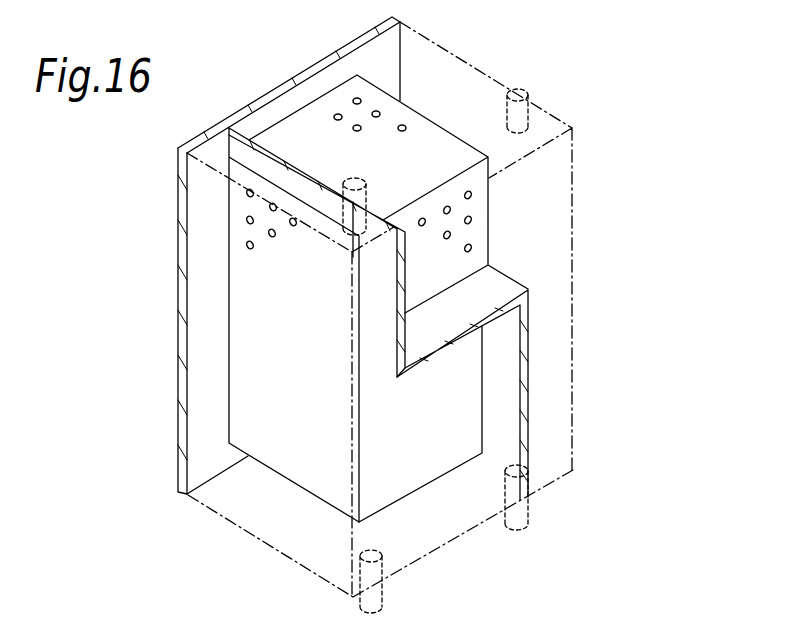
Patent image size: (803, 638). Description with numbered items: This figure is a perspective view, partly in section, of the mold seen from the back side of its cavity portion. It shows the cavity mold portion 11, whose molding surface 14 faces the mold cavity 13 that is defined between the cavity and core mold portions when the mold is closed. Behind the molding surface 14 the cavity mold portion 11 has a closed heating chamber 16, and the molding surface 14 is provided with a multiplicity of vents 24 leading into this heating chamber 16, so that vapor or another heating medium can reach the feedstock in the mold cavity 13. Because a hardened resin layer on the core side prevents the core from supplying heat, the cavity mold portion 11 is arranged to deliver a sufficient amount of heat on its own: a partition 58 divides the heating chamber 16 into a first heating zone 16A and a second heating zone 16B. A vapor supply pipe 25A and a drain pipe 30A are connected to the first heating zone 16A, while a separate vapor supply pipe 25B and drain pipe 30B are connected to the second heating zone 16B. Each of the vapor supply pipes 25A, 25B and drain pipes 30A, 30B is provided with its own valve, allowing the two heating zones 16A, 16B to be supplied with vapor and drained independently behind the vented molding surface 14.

The cavity mold portion 11 is at (180, 305).
The mold cavity 13 is at (423, 452).
The molding surface 14 is at (280, 458).
The heating chamber 16 is at (207, 200).
The first heating zone 16A is at (207, 411).
The second heating zone 16B is at (553, 398).
The vents 24 is at (381, 111).
The vapor supply pipe 25A is at (350, 184).
The vapor supply pipe 25B is at (515, 88).
The drain pipe 30A is at (383, 590).
The drain pipe 30B is at (527, 500).
The partition 58 is at (463, 345).